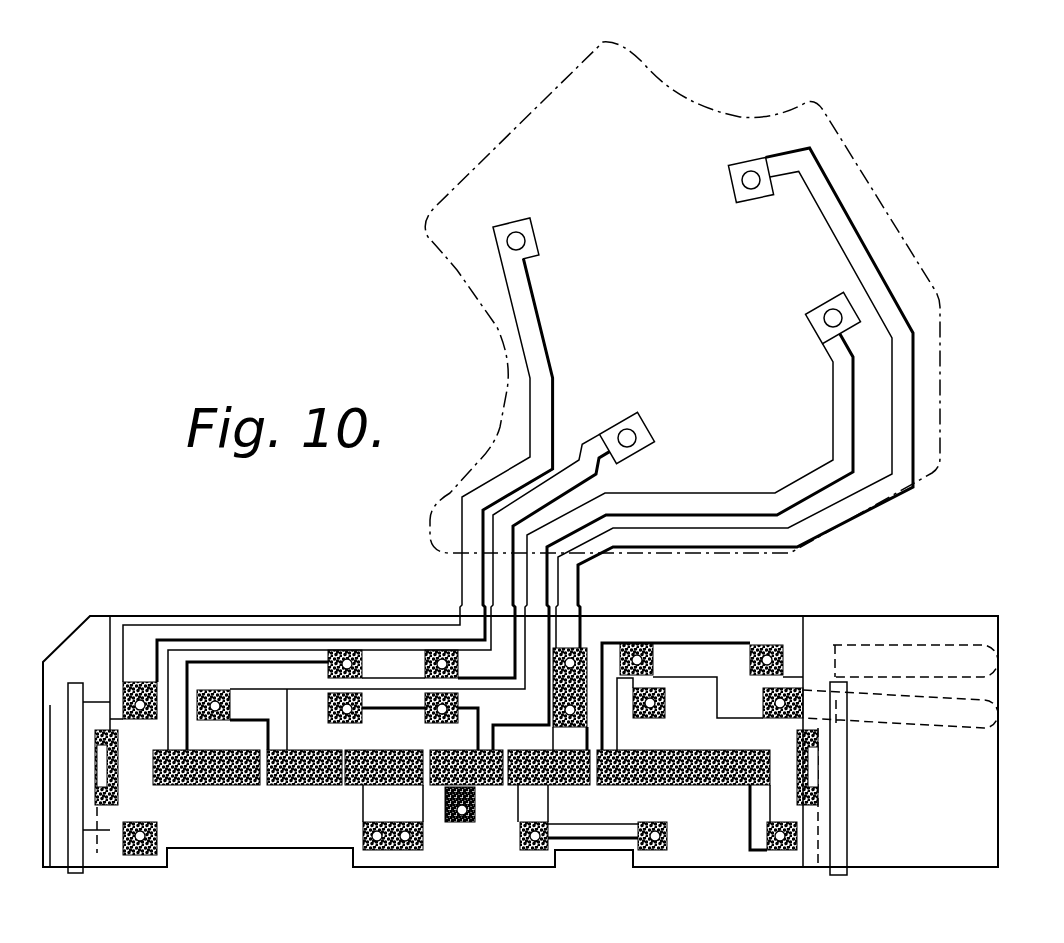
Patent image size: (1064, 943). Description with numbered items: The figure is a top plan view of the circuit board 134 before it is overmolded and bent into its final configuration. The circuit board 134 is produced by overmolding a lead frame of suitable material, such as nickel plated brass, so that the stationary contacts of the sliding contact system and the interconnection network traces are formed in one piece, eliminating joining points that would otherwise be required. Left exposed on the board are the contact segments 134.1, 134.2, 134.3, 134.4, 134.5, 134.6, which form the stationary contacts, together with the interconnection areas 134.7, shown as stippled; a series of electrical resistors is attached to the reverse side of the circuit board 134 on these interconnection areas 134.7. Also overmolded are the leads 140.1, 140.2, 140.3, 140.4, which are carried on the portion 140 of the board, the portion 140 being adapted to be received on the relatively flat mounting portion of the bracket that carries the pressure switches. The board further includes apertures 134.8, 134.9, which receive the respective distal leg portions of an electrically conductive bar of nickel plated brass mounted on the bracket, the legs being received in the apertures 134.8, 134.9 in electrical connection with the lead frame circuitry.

The portion 140 is at (940, 372).
The lead 140.1 is at (533, 372).
The lead 140.2 is at (724, 540).
The lead 140.3 is at (603, 432).
The lead 140.4 is at (803, 487).
The circuit board 134 is at (262, 614).
The contact segment 134.1 is at (240, 778).
The contact segment 134.2 is at (298, 772).
The contact segment 134.3 is at (396, 786).
The contact segment 134.4 is at (486, 790).
The contact segment 134.5 is at (568, 778).
The contact segment 134.6 is at (700, 775).
The interconnection area 134.7 is at (326, 667).
The aperture 134.8 is at (107, 800).
The aperture 134.9 is at (813, 770).